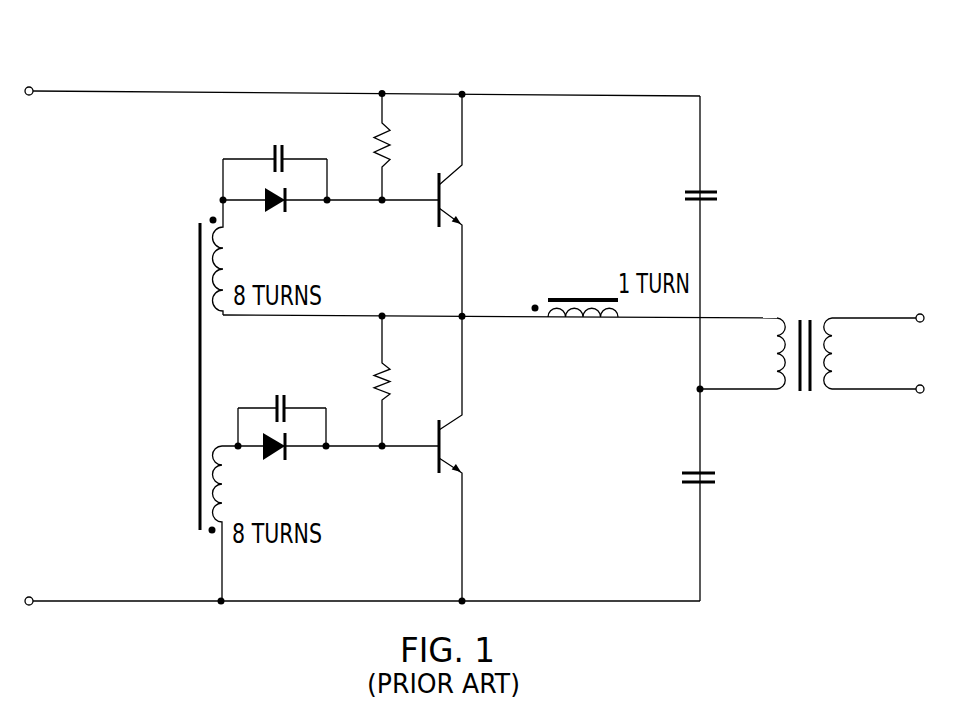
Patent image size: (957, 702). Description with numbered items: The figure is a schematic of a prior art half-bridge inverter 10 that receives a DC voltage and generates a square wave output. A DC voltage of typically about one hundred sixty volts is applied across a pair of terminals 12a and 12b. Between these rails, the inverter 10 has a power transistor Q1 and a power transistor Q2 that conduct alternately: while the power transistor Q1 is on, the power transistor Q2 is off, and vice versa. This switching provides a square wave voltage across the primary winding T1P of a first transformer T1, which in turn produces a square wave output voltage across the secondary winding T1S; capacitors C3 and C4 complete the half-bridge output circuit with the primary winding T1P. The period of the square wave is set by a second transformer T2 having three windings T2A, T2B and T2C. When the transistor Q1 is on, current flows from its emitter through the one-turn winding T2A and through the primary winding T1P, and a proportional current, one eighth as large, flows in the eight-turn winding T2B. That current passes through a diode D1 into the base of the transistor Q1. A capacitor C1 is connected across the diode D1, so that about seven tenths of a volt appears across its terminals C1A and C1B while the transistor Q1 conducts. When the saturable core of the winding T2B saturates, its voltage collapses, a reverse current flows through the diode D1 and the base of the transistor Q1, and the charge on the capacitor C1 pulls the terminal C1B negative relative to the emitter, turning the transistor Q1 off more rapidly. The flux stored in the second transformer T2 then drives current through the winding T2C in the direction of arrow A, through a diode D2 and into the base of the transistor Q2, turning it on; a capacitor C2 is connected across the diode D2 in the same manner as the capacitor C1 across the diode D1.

The inverter 10 is at (668, 72).
The terminal 12a is at (222, 91).
The terminal 12b is at (154, 601).
The power transistor Q1 is at (450, 183).
The power transistor Q2 is at (450, 430).
The capacitor C1 is at (282, 145).
The terminal of capacitor C1 C1A is at (236, 159).
The terminal of capacitor C1 C1B is at (306, 159).
The capacitor C2 is at (285, 406).
The diode D1 is at (279, 210).
The diode D2 is at (288, 455).
The second transformer T2 is at (200, 363).
The winding T2A is at (563, 319).
The winding T2B is at (222, 262).
The winding T2C is at (222, 493).
The arrow A is at (236, 560).
The capacitor C3 is at (717, 191).
The capacitor C4 is at (715, 470).
The first transformer T1 is at (800, 318).
The primary winding T1P is at (777, 355).
The secondary winding T1S is at (832, 356).